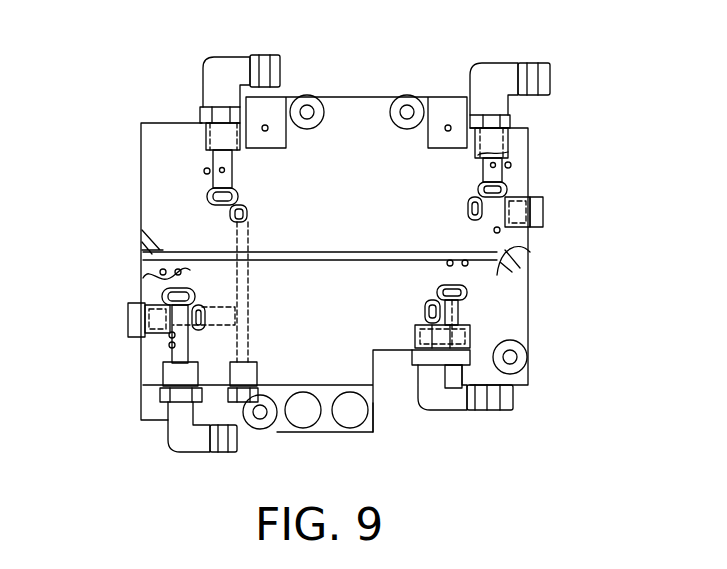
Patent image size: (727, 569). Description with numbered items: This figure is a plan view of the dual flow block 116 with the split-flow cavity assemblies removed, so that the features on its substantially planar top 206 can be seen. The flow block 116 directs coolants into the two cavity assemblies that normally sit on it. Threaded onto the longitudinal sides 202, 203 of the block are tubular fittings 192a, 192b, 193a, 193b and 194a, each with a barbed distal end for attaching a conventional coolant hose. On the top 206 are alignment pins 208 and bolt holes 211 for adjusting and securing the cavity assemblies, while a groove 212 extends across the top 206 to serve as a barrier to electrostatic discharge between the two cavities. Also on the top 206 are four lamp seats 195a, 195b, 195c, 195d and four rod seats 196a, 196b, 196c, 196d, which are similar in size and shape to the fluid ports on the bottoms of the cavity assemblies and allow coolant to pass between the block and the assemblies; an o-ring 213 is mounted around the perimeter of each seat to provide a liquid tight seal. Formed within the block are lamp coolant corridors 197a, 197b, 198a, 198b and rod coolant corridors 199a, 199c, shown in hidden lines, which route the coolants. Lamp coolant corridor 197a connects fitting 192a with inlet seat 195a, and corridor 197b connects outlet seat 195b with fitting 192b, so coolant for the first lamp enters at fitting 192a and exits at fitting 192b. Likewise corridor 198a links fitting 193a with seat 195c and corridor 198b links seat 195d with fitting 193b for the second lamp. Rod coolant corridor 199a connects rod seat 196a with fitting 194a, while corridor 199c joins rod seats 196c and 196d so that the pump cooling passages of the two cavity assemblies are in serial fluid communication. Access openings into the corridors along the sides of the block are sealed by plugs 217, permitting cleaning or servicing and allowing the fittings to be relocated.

The dual flow block 116 is at (165, 163).
The tubular fitting 192a is at (500, 62).
The tubular fitting 192b is at (222, 72).
The tubular fitting 193a is at (457, 373).
The tubular fitting 193b is at (176, 432).
The tubular fitting 194a is at (448, 400).
The lamp seat 195a is at (507, 190).
The lamp seat 195b is at (206, 205).
The lamp seat 195c is at (468, 290).
The lamp seat 195d is at (160, 297).
The rod seat 196a is at (430, 305).
The rod seat 196b is at (470, 208).
The rod seat 196c is at (249, 212).
The rod seat 196d is at (210, 300).
The lamp coolant corridor 197a is at (507, 176).
The lamp coolant corridor 197b is at (206, 155).
The lamp coolant corridor 198a is at (466, 332).
The lamp coolant corridor 198b is at (170, 350).
The rod coolant corridor 199a is at (420, 312).
The rod coolant corridor 199c is at (240, 297).
The longitudinal side 202 is at (362, 97).
The longitudinal side 203 is at (380, 403).
The planar top 206 is at (322, 365).
The alignment pin 208 is at (152, 272).
The bolt hole 211 is at (204, 172).
The groove 212 is at (530, 250).
The o-ring 213 is at (448, 284).
The plug 217 is at (543, 210).